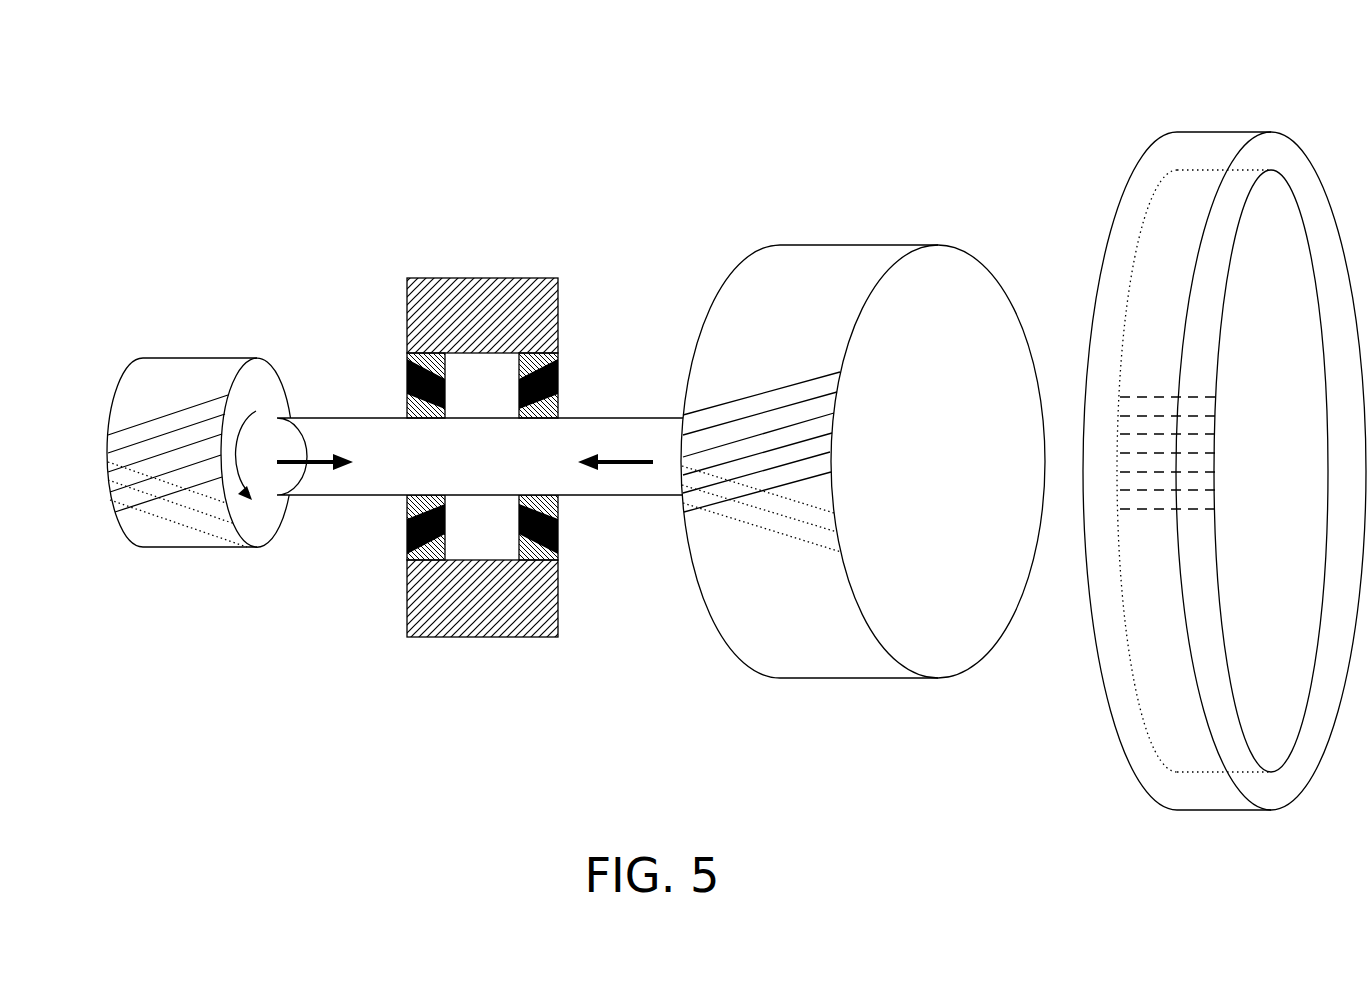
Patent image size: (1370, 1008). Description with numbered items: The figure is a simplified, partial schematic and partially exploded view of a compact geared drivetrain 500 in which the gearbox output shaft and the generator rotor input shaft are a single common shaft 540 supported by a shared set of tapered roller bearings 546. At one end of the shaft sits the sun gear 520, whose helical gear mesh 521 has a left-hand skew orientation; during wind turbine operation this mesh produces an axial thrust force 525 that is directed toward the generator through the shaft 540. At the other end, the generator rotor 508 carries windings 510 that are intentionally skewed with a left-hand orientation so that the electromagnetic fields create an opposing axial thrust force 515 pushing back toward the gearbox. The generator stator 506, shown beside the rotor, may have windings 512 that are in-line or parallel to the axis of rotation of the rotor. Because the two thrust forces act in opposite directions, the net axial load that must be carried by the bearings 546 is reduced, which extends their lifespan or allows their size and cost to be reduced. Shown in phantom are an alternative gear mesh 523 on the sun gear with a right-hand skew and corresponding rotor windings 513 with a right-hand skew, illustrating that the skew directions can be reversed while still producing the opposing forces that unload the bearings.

The compact geared drivetrain 500 is at (396, 78).
The generator stator 506 is at (1248, 467).
The generator rotor 508 is at (911, 481).
The windings 510 is at (757, 390).
The windings 512 is at (1147, 397).
The windings 513 is at (757, 527).
The opposing axial thrust force 515 is at (617, 466).
The sun gear 520 is at (190, 358).
The helical gear mesh 521 is at (147, 418).
The gear mesh 523 is at (187, 508).
The axial thrust force 525 is at (300, 466).
The common shaft 540 is at (458, 473).
The tapered roller bearings 546 is at (382, 386).